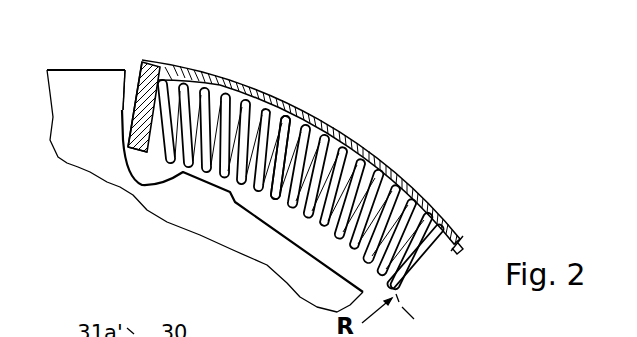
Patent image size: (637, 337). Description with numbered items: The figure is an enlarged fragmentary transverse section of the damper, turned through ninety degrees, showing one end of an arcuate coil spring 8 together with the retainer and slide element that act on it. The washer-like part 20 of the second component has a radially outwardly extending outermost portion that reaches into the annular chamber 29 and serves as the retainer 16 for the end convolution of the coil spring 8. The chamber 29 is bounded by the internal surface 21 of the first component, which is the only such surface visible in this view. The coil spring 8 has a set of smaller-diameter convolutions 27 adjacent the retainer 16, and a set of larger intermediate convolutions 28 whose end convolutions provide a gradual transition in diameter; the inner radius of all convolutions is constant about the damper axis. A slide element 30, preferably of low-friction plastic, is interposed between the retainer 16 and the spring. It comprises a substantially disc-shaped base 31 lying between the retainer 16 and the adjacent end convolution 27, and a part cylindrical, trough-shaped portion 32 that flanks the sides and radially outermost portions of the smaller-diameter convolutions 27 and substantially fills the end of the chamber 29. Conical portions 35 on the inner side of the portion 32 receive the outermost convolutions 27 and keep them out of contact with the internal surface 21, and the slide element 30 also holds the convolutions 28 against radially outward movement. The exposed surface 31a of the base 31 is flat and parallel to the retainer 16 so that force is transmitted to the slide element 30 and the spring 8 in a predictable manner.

The arcuate coil spring 8 is at (405, 255).
The retainer 16 is at (125, 70).
The washer-like part 20 is at (90, 155).
The internal surface 21 is at (362, 148).
The smaller-diameter convolutions 27 is at (301, 137).
The intermediate convolutions 28 is at (428, 200).
The annular chamber 29 is at (317, 120).
The slide element 30 is at (137, 160).
The disc-shaped base 31 is at (136, 149).
The exposed surface of the base 31a is at (128, 128).
The part cylindrical portion 32 is at (220, 87).
The conical portions 35 is at (182, 86).